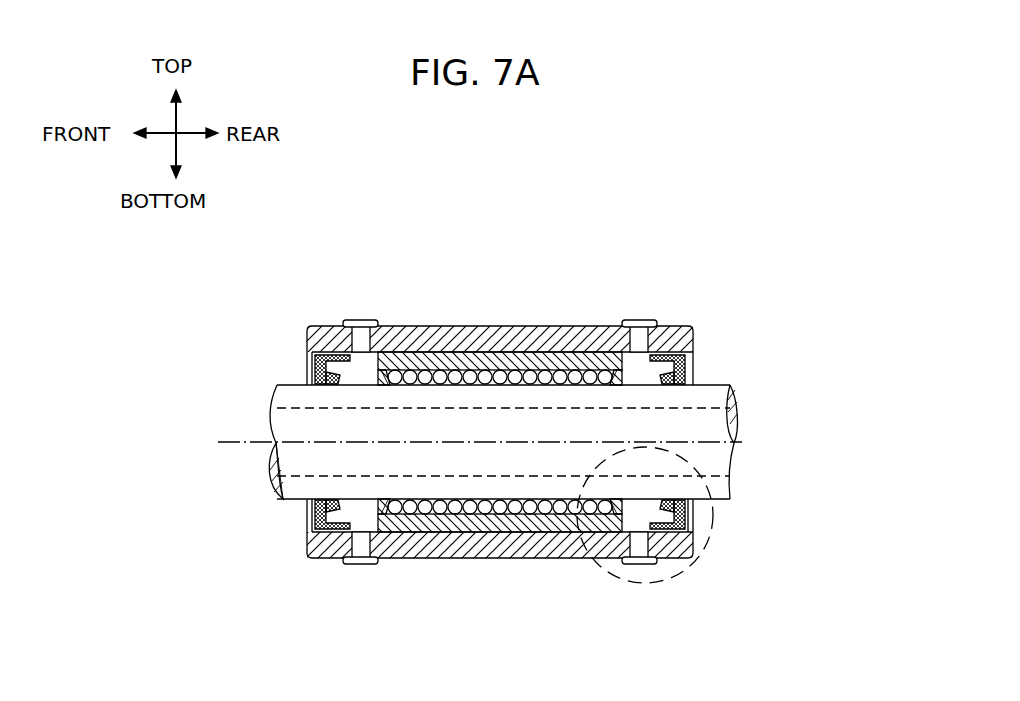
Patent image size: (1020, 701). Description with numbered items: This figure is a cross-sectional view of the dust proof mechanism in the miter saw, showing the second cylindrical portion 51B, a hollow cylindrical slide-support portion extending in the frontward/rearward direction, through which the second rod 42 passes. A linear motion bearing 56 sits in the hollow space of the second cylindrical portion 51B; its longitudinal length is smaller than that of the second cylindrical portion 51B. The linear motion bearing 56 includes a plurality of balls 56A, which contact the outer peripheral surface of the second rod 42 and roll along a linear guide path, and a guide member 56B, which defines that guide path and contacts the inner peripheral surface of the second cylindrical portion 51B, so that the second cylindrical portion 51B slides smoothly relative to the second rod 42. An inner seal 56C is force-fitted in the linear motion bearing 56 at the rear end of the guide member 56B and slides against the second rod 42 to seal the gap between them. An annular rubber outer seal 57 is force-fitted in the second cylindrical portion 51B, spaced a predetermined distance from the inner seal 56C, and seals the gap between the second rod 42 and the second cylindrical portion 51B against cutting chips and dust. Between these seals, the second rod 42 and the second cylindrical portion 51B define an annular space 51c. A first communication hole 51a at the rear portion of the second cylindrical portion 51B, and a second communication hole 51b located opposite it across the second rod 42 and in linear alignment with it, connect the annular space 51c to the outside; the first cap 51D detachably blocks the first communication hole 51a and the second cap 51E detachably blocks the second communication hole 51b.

The second rod 42 is at (303, 423).
The second cylindrical portion 51B is at (525, 326).
The first cap 51D is at (353, 567).
The second cap 51E is at (350, 322).
The first communication hole 51a is at (366, 550).
The second communication hole 51b is at (361, 323).
The annular space 51c is at (312, 537).
The linear motion bearing 56 is at (504, 438).
The balls 56A is at (495, 360).
The guide member 56B is at (497, 528).
The inner seal 56C is at (376, 372).
The outer seal 57 is at (352, 518).